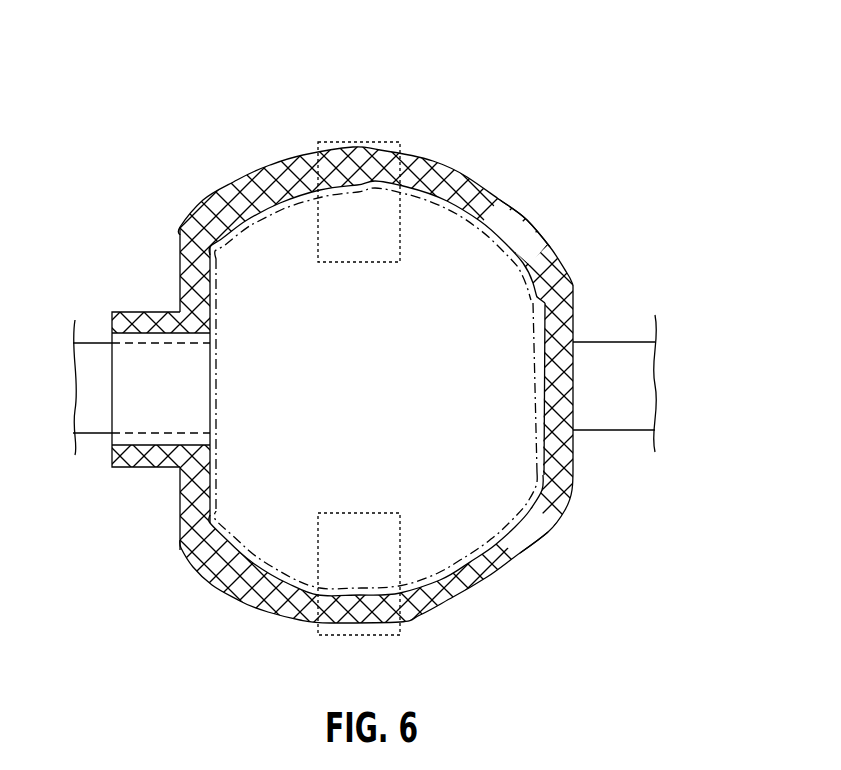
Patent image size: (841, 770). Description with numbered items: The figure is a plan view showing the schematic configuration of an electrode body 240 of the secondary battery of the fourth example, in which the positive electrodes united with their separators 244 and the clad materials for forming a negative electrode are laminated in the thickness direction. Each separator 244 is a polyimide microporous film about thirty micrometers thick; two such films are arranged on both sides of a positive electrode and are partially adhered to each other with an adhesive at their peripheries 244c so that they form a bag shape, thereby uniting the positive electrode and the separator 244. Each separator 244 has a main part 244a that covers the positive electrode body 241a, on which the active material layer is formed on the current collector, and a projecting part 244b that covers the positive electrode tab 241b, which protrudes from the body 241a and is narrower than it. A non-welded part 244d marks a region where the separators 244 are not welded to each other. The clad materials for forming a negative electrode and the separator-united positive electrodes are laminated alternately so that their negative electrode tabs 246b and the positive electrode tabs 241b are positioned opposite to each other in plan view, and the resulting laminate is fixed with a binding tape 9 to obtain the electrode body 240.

The electrode body 240 is at (545, 102).
The separator 244 is at (367, 367).
The main part 244a is at (538, 467).
The projecting part 244b is at (148, 418).
The periphery 244c is at (452, 167).
The non-welded part 244d is at (527, 230).
The positive electrode body 241a is at (265, 267).
The positive electrode tab 241b is at (95, 353).
The negative electrode tab 246b is at (600, 357).
The binding tape 9 is at (375, 148).